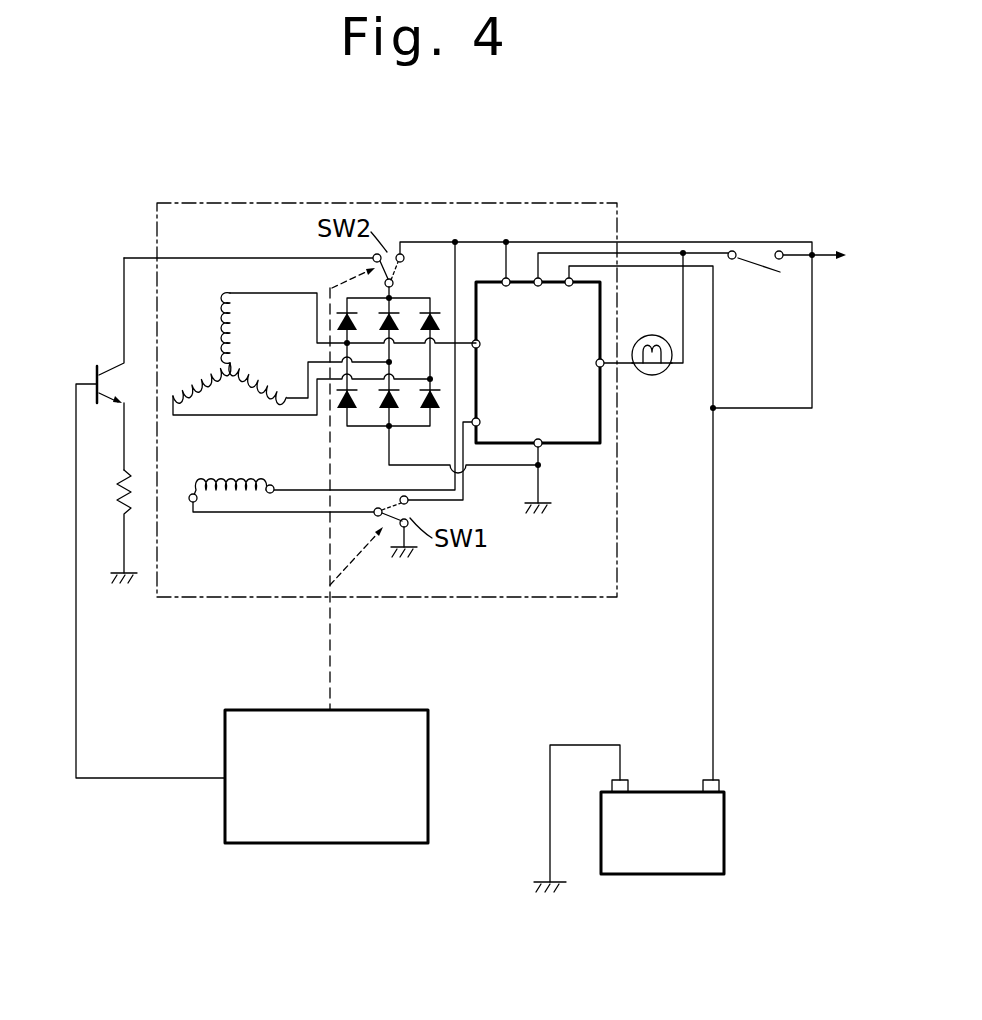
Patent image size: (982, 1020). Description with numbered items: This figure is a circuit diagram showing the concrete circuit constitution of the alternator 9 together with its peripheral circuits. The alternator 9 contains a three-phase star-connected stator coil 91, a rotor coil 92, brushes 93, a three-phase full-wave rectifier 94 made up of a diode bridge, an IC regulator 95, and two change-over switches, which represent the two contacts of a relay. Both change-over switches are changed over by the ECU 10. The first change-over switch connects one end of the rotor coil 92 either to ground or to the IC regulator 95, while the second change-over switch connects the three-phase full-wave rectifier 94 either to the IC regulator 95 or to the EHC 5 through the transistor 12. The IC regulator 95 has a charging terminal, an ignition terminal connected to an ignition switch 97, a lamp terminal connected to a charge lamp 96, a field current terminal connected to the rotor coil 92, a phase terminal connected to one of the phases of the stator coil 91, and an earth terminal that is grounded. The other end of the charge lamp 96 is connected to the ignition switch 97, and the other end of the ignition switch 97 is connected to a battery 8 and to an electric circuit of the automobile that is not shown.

The alternator 9 is at (322, 196).
The three-phase full-wave rectifier 94 is at (418, 297).
The IC regulator 95 is at (583, 445).
The charge lamp 96 is at (656, 376).
The ignition switch 97 is at (763, 273).
The stator coil 91 is at (242, 358).
The rotor coil 92 is at (243, 478).
The brushes 93 is at (191, 502).
The transistor 12 is at (96, 370).
The EHC 5 is at (117, 497).
The ECU 10 is at (430, 742).
The battery 8 is at (725, 835).